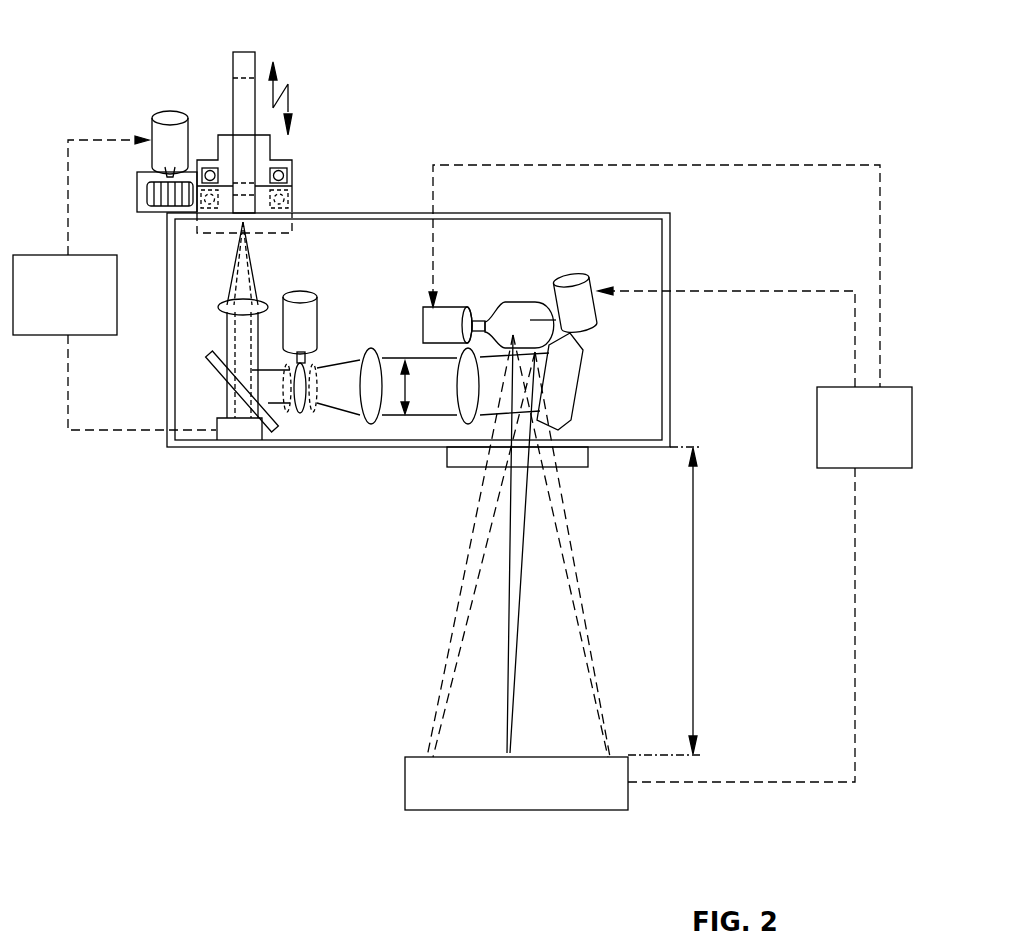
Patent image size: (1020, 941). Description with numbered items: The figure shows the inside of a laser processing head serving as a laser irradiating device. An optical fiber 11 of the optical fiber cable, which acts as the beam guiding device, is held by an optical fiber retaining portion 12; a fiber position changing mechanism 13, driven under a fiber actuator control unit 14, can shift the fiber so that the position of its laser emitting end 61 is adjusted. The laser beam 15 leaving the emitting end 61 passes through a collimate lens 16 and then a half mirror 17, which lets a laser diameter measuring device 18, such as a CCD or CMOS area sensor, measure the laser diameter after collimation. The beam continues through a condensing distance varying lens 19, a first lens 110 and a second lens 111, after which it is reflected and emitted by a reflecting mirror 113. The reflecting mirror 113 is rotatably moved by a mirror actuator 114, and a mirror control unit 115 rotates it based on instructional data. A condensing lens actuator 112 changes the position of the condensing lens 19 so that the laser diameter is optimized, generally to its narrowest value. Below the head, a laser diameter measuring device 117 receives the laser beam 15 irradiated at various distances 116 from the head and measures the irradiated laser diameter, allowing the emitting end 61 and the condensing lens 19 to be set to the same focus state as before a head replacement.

The optical fiber 11 is at (233, 64).
The optical fiber retaining portion 12 is at (277, 160).
The fiber position changing mechanism 13 is at (137, 190).
The fiber actuator control unit 14 is at (50, 306).
The laser emitting end 61 is at (246, 229).
The collimate lens 16 is at (228, 304).
The half mirror 17 is at (208, 364).
The laser diameter measuring device 18 is at (243, 442).
The condensing distance varying lens 19 is at (300, 413).
The first lens 110 is at (371, 424).
The second lens 111 is at (457, 378).
The condensing lens actuator 112 is at (301, 294).
The reflecting mirror 113 is at (566, 375).
The mirror actuator 114 is at (455, 308).
The mirror control unit 115 is at (845, 439).
The distance 116 is at (686, 601).
The laser diameter measuring device 117 is at (490, 795).
The laser beam 15 is at (513, 661).